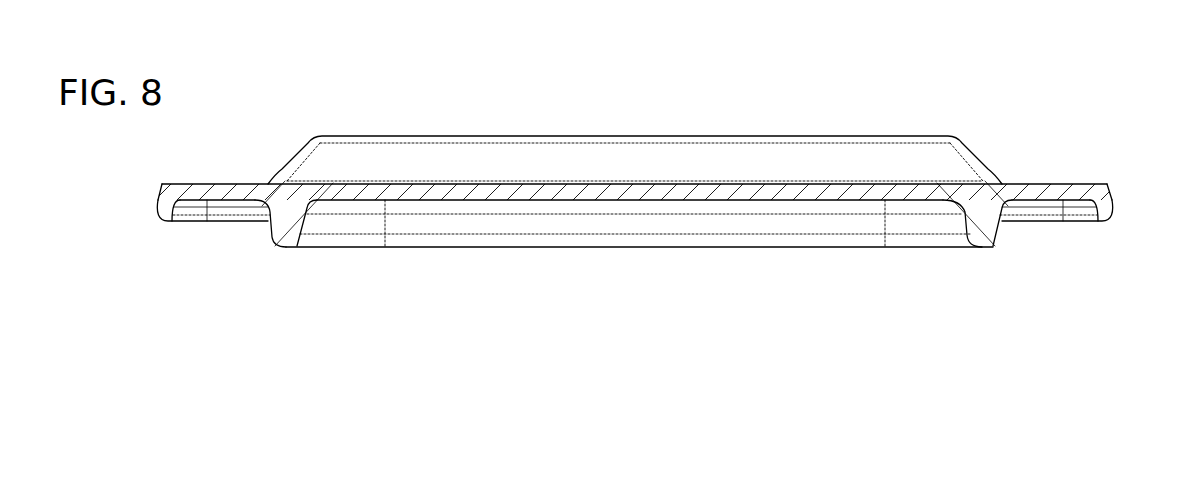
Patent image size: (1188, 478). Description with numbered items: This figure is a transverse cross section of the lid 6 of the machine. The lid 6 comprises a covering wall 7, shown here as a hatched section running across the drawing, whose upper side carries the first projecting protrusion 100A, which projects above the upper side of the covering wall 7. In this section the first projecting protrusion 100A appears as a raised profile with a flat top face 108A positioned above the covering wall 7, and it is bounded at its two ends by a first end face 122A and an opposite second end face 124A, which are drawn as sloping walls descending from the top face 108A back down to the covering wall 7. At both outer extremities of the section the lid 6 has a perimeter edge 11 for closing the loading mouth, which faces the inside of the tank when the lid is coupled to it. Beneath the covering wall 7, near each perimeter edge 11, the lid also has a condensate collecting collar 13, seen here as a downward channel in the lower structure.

The lid 6 is at (1041, 136).
The covering wall 7 is at (615, 160).
The perimeter edge 11 is at (162, 210).
The condensate collecting collar 13 is at (287, 242).
The first projecting protrusion 100A is at (870, 104).
The top face 108A is at (738, 137).
The first end face 122A is at (289, 147).
The second end face 124A is at (978, 155).